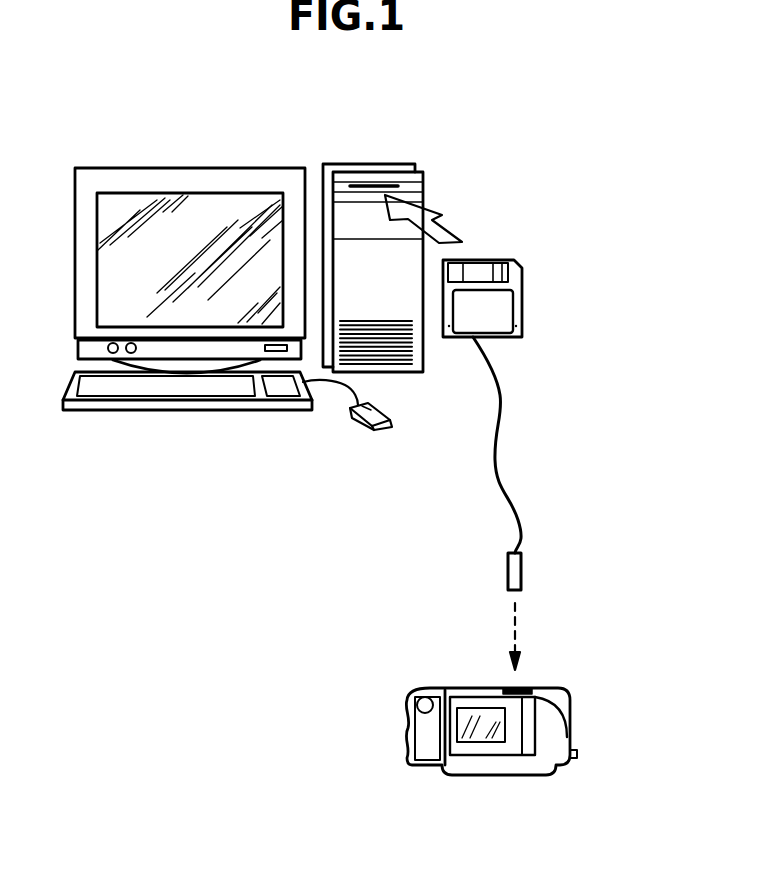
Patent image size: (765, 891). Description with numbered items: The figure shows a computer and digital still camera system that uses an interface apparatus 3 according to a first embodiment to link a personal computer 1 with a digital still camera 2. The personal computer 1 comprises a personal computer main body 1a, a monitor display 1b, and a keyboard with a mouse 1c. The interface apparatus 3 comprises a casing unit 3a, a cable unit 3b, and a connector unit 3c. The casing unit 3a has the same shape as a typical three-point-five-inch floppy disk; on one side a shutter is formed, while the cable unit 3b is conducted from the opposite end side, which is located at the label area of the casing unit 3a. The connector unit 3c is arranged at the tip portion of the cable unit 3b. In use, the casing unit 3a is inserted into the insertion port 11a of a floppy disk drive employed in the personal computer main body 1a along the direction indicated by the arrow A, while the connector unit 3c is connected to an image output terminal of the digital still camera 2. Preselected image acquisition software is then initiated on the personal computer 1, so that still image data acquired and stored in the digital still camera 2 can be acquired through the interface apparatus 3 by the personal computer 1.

The personal computer 1 is at (295, 301).
The personal computer main body 1a is at (411, 246).
The monitor display 1b is at (247, 170).
The keyboard with a mouse 1c is at (320, 393).
The insertion port 11a is at (397, 184).
The arrow A is at (448, 232).
The digital still camera 2 is at (552, 690).
The interface apparatus 3 is at (526, 425).
The casing unit 3a is at (522, 301).
The cable unit 3b is at (497, 468).
The connector unit 3c is at (521, 573).